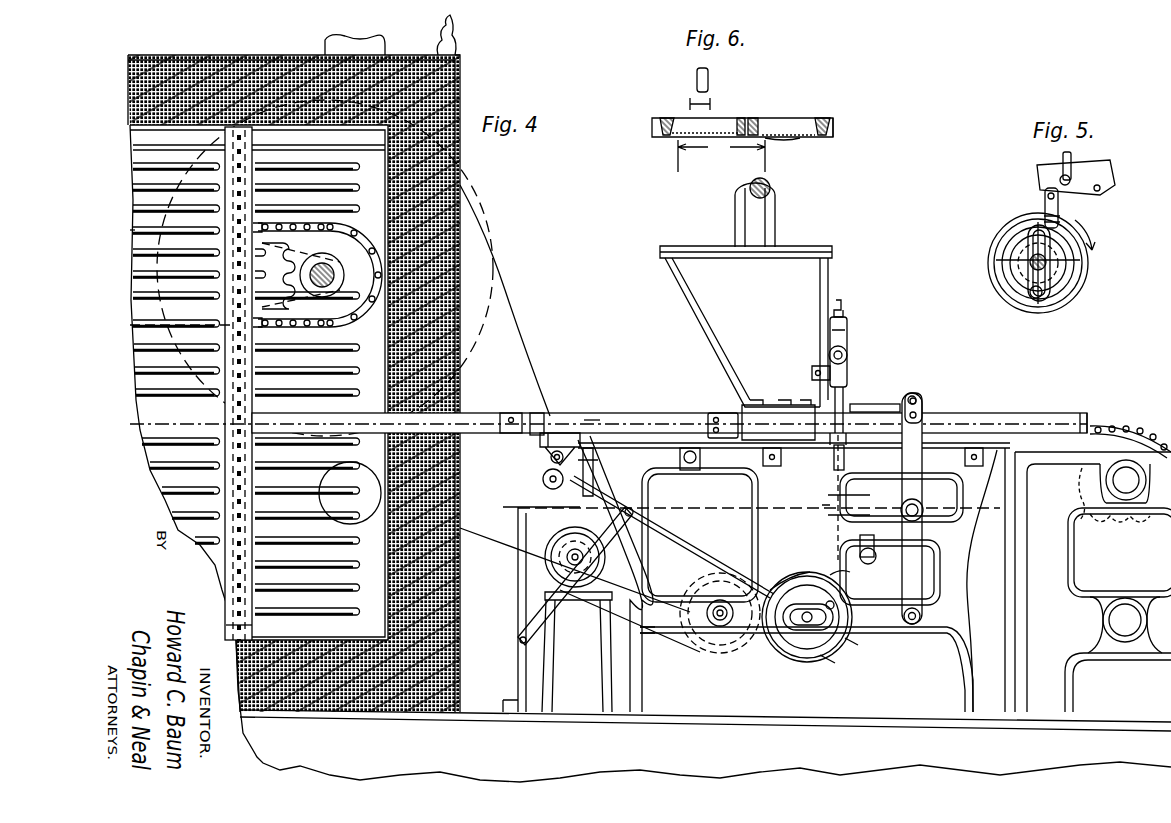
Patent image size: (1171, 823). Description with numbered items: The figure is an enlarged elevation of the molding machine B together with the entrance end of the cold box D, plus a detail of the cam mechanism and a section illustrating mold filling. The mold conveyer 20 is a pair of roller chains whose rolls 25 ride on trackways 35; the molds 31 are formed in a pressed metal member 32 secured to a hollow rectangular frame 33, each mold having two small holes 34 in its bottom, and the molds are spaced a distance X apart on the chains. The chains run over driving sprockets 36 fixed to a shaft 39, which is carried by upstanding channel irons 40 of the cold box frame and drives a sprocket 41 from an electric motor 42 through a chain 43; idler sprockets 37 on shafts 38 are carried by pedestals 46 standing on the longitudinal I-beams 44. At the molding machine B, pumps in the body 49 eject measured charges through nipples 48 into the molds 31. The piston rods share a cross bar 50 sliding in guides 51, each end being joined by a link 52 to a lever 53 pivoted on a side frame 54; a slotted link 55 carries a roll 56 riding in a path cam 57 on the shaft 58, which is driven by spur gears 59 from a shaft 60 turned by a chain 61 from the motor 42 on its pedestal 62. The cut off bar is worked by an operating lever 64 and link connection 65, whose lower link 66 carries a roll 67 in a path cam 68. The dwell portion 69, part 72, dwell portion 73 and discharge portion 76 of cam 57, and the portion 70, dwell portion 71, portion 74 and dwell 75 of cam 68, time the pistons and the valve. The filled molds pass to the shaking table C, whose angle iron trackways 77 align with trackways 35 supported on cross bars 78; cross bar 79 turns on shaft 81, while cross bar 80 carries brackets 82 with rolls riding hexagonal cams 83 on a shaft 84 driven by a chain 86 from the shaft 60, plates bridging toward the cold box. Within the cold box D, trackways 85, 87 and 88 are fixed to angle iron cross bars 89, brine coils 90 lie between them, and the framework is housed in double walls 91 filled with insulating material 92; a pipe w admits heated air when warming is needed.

In FIG. 4, the mold conveyer 20 is at (340, 324).
In FIG. 4, the rolls 25 is at (1162, 568).
In FIG. 6, the molds 31 is at (722, 120).
In FIG. 6, the pressed metal member 32 is at (824, 118).
In FIG. 6, the hollow rectangular frame 33 is at (832, 138).
In FIG. 6, the small holes 34 is at (786, 142).
In FIG. 4, the trackways 35 is at (1064, 412).
In FIG. 4, the driving sprocket 36 is at (301, 276).
In FIG. 4, the idler sprockets 37 is at (1119, 532).
In FIG. 4, the shafts 38 is at (1134, 480).
In FIG. 4, the shaft 39 is at (328, 262).
In FIG. 4, the upstanding channel irons 40 is at (248, 627).
In FIG. 4, the sprocket 41 is at (478, 338).
In FIG. 4, the electric motor 42 is at (545, 565).
In FIG. 4, the chain 43 is at (522, 334).
In FIG. 4, the I-beams 44 is at (705, 733).
In FIG. 4, the pedestals 46 is at (1093, 582).
In FIG. 4, the nipples 48 is at (825, 452).
In FIG. 6, the nipples 48 is at (708, 76).
In FIG. 4, the body 49 is at (848, 380).
In FIG. 4, the cross bar 50 is at (850, 352).
In FIG. 4, the guides 51 is at (830, 330).
In FIG. 4, the link 52 is at (843, 488).
In FIG. 5, the link 52 is at (1074, 158).
In FIG. 4, the lever 53 is at (862, 504).
In FIG. 5, the lever 53 is at (1108, 165).
In FIG. 4, the side frames 54 is at (978, 686).
In FIG. 4, the link 55 is at (826, 556).
In FIG. 5, the link 55 is at (1030, 218).
In FIG. 5, the roll 56 is at (1020, 306).
In FIG. 5, the path cam 57 is at (1076, 292).
In FIG. 4, the shaft 58 is at (807, 639).
In FIG. 5, the shaft 58 is at (1062, 263).
In FIG. 4, the spur gears 59 is at (760, 652).
In FIG. 4, the shaft 60 is at (704, 656).
In FIG. 4, the chain 61 is at (662, 640).
In FIG. 4, the pedestal 62 is at (577, 652).
In FIG. 4, the operating lever 64 is at (924, 530).
In FIG. 4, the link connection 65 is at (900, 406).
In FIG. 4, the link 66 is at (895, 640).
In FIG. 4, the roll 67 is at (842, 660).
In FIG. 4, the path cam 68 is at (788, 666).
In FIG. 5, the dwell portion 69 is at (1095, 248).
In FIG. 4, the cam portion 70 is at (846, 580).
In FIG. 4, the dwell portion 71 is at (780, 590).
In FIG. 5, the cam part 72 is at (1008, 238).
In FIG. 5, the dwell portion 73 is at (1002, 280).
In FIG. 4, the cam portion 74 is at (864, 640).
In FIG. 4, the dwell 75 is at (856, 596).
In FIG. 5, the cam portion 76 is at (1046, 312).
In FIG. 4, the angle iron trackways 77 is at (636, 414).
In FIG. 4, the cross bars 78 is at (872, 462).
In FIG. 4, the cross bar 79 is at (705, 456).
In FIG. 4, the cross bar 80 is at (540, 445).
In FIG. 4, the shaft 81 is at (700, 535).
In FIG. 4, the brackets 82 is at (568, 414).
In FIG. 4, the hexagonal cams 83 is at (545, 483).
In FIG. 4, the shaft 84 is at (602, 452).
In FIG. 4, the trackways 85 is at (480, 414).
In FIG. 4, the chain 86 is at (522, 414).
In FIG. 4, the trackways 87 is at (138, 324).
In FIG. 4, the trackways 88 is at (138, 214).
In FIG. 4, the angle iron cross bars 89 is at (220, 450).
In FIG. 4, the brine coils 90 is at (360, 172).
In FIG. 4, the double walls 91 is at (446, 30).
In FIG. 4, the insulating material 92 is at (462, 68).
In FIG. 4, the molding machine B is at (857, 328).
In FIG. 4, the shaking table C is at (648, 398).
In FIG. 4, the cold box D is at (251, 43).
In FIG. 4, the feed pipe J is at (772, 212).
In FIG. 4, the pipe w is at (380, 44).
In FIG. 6, the distance x X is at (721, 134).